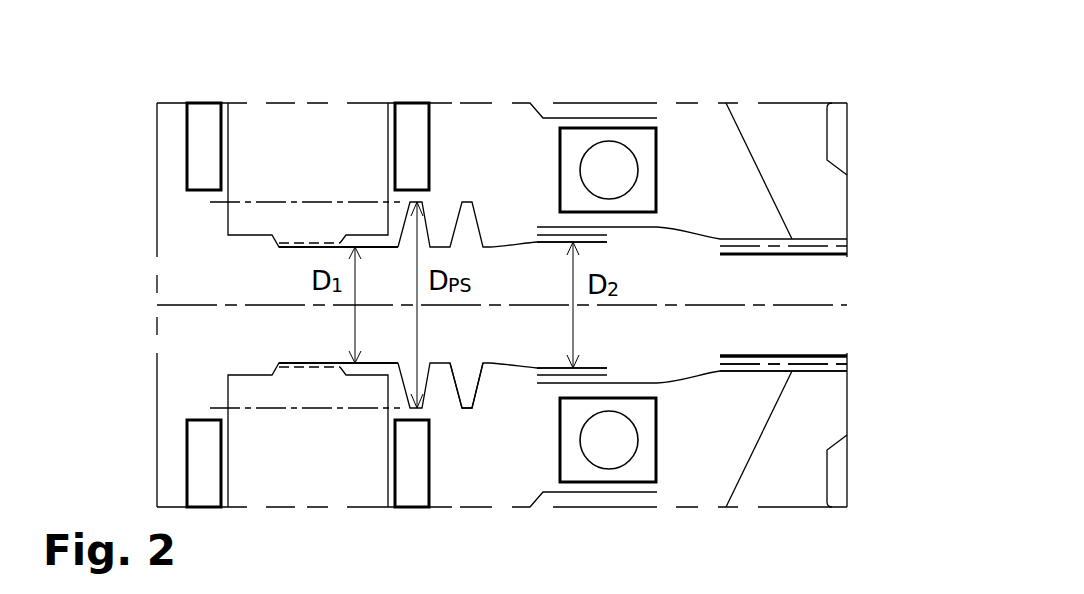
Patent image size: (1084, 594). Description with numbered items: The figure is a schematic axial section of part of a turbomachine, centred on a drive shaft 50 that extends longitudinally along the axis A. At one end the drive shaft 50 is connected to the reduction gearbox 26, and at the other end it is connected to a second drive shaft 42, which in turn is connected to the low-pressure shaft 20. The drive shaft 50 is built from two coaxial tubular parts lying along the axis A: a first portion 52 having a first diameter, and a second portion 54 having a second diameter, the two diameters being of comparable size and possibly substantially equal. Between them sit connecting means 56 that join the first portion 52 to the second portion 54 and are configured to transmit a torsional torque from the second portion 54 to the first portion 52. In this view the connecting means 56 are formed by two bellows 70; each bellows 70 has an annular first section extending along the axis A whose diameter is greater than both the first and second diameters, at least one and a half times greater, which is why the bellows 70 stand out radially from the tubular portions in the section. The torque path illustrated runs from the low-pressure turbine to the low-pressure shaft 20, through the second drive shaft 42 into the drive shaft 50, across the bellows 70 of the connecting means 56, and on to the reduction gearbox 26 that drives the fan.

The low-pressure shaft 20 is at (826, 349).
The reduction gearbox 26 is at (303, 158).
The second drive shaft 42 is at (697, 220).
The drive shaft 50 is at (515, 146).
The first portion 52 is at (282, 253).
The second portion 54 is at (533, 252).
The connecting means 56 is at (467, 428).
The bellows 70 is at (426, 218).
The axis A is at (815, 304).